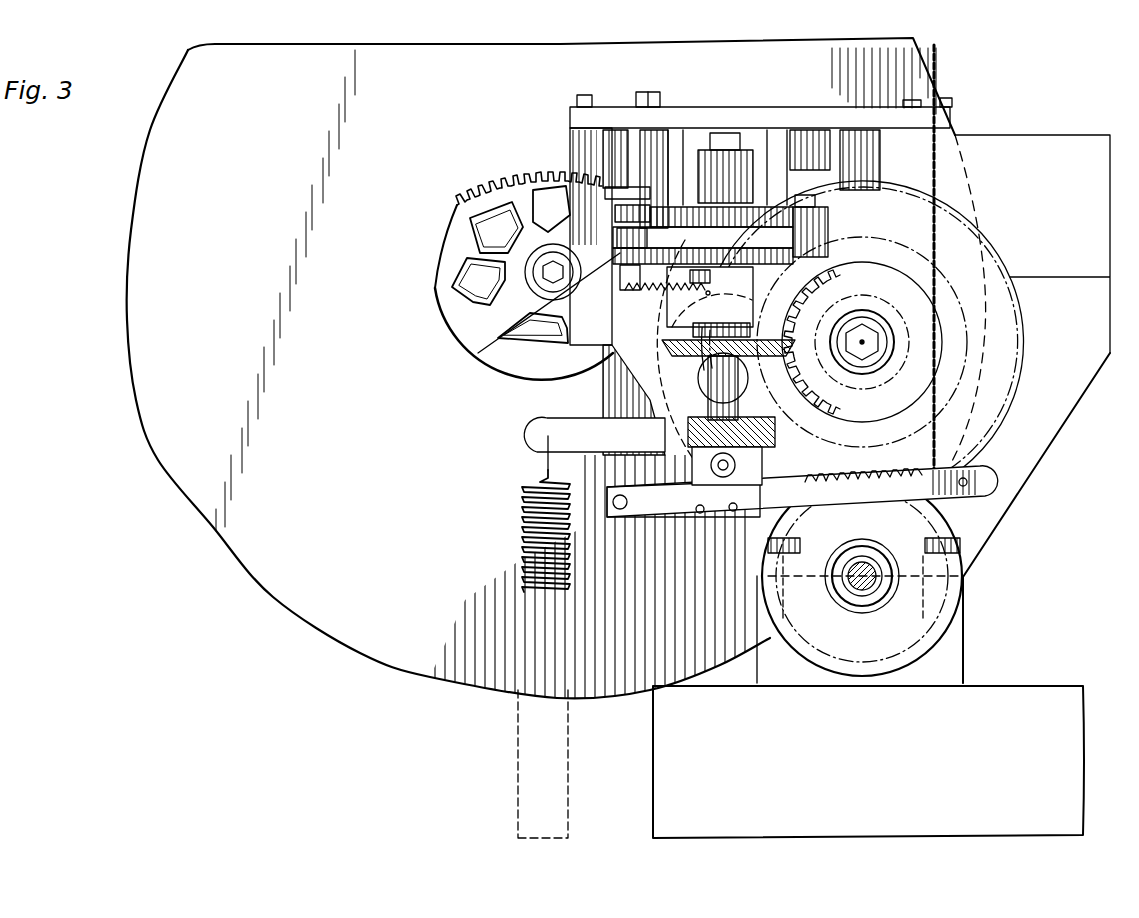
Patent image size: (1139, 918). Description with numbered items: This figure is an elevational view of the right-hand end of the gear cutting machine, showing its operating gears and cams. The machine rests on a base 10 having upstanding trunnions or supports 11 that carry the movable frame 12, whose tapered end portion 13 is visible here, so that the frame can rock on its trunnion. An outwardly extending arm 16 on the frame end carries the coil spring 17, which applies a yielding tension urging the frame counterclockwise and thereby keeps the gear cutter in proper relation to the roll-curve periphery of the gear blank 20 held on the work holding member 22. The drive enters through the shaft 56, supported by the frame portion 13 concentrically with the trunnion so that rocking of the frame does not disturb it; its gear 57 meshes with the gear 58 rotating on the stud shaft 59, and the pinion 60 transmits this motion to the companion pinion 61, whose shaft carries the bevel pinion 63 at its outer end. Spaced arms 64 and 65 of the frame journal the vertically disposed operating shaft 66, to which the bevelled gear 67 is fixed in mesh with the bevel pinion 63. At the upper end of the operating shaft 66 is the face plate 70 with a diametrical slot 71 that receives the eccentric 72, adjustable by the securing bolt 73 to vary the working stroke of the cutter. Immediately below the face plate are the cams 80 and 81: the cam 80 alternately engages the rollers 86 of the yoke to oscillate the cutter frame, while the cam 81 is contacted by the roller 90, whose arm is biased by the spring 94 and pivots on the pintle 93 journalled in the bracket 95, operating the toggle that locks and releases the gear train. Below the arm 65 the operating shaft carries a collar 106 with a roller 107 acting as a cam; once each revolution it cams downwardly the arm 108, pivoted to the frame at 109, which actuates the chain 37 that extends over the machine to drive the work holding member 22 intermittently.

The base 10 is at (1068, 695).
The trunnions or supports 11 is at (965, 625).
The movable frame 12 is at (1043, 156).
The end portion 13 is at (1062, 427).
The arm 16 is at (536, 430).
The coil spring 17 is at (526, 557).
The gear blank 20 is at (470, 320).
The work holding member 22 is at (165, 242).
The chain 37 is at (938, 165).
The shaft 56 is at (867, 590).
The gear 57 is at (935, 520).
The gear 58 is at (995, 326).
The stud shaft 59 is at (862, 350).
The pinion 60 is at (893, 388).
The companion pinion 61 is at (795, 400).
The bevel pinion 63 is at (697, 380).
The arm 64 is at (743, 276).
The arm 65 is at (652, 513).
The operating shaft 66 is at (717, 404).
The bevelled gear 67 is at (662, 363).
The face plate 70 is at (770, 205).
The diametrical slot 71 is at (698, 213).
The eccentric 72 is at (730, 150).
The securing bolt 73 is at (723, 133).
The cam 80 is at (788, 238).
The cam 81 is at (726, 318).
The rollers 86 is at (628, 232).
The roller 90 is at (527, 316).
The pintle 93 is at (620, 212).
The spring 94 is at (665, 298).
The bracket 95 is at (615, 190).
The collar 106 is at (700, 430).
The roller 107 is at (722, 478).
The arm 108 is at (988, 480).
The pivot 109 is at (612, 502).